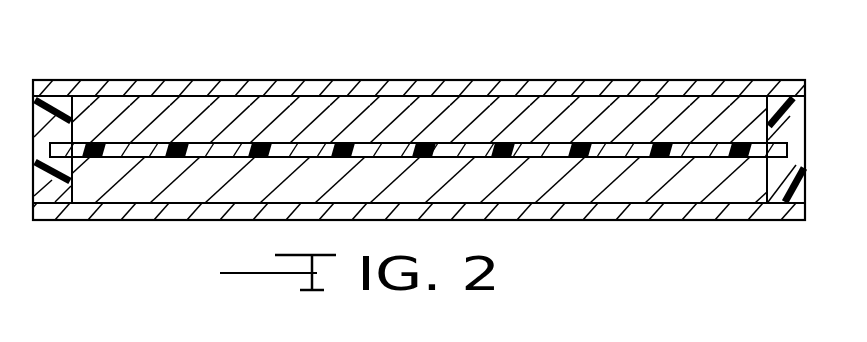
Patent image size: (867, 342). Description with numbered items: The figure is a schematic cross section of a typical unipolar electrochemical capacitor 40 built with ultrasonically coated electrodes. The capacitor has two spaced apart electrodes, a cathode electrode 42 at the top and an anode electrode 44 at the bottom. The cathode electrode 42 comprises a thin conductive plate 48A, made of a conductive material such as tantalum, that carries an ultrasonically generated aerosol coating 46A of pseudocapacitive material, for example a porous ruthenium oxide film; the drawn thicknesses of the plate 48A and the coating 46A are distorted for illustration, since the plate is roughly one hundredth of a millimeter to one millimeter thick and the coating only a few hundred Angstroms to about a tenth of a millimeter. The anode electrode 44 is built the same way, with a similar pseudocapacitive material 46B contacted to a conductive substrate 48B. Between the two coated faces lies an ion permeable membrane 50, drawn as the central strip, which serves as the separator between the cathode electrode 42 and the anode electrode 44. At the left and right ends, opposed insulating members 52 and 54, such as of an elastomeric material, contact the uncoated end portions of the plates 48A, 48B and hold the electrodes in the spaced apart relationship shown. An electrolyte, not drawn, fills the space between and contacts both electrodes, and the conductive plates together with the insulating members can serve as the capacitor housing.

The unipolar electrochemical capacitor 40 is at (588, 70).
The cathode electrode 42 is at (98, 80).
The anode electrode 44 is at (580, 220).
The aerosol coating of pseudocapacitive material 46A is at (177, 115).
The pseudocapacitive material 46B is at (128, 185).
The conductive plate 48A is at (293, 88).
The conductive substrate 48B is at (715, 210).
The ion permeable membrane 50 is at (396, 150).
The insulating member 52 is at (790, 120).
The insulating member 54 is at (43, 185).